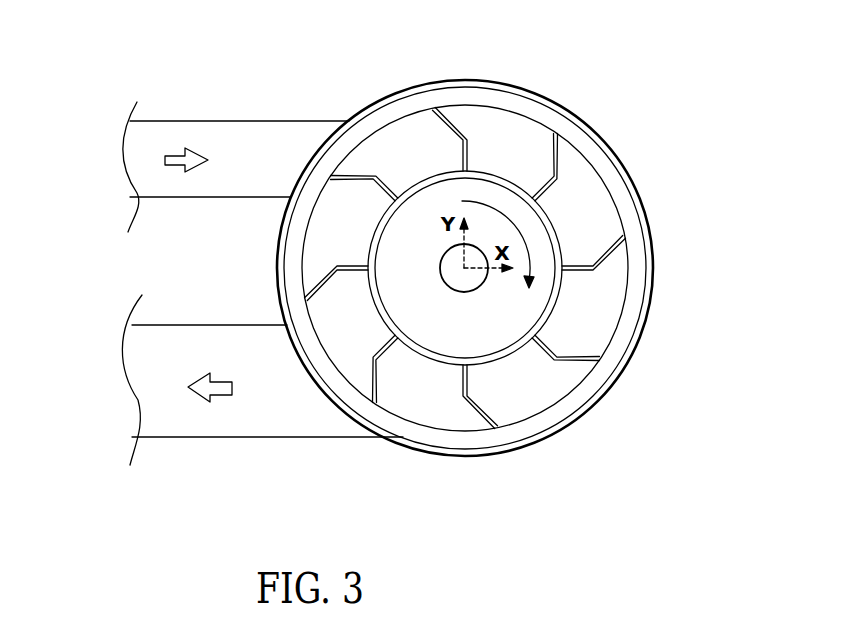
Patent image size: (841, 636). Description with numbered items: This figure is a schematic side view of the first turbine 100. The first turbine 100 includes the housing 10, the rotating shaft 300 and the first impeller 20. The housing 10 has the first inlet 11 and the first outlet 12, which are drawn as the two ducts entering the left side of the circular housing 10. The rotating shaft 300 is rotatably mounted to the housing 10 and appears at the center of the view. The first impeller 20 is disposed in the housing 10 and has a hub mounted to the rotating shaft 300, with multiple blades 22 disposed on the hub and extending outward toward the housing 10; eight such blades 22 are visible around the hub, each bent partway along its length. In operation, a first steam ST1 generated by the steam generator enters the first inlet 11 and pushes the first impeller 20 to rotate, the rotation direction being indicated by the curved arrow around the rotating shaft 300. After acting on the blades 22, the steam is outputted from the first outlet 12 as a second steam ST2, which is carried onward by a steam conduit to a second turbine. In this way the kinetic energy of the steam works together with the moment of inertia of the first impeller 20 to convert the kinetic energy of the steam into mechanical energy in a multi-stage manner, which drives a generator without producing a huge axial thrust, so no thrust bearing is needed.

The first turbine 100 is at (420, 38).
The housing 10 is at (636, 190).
The first inlet 11 is at (318, 162).
The first outlet 12 is at (323, 385).
The first impeller 20 is at (586, 147).
The blades 22 is at (462, 132).
The rotating shaft 300 is at (472, 283).
The first steam ST1 is at (198, 152).
The second steam ST2 is at (203, 397).